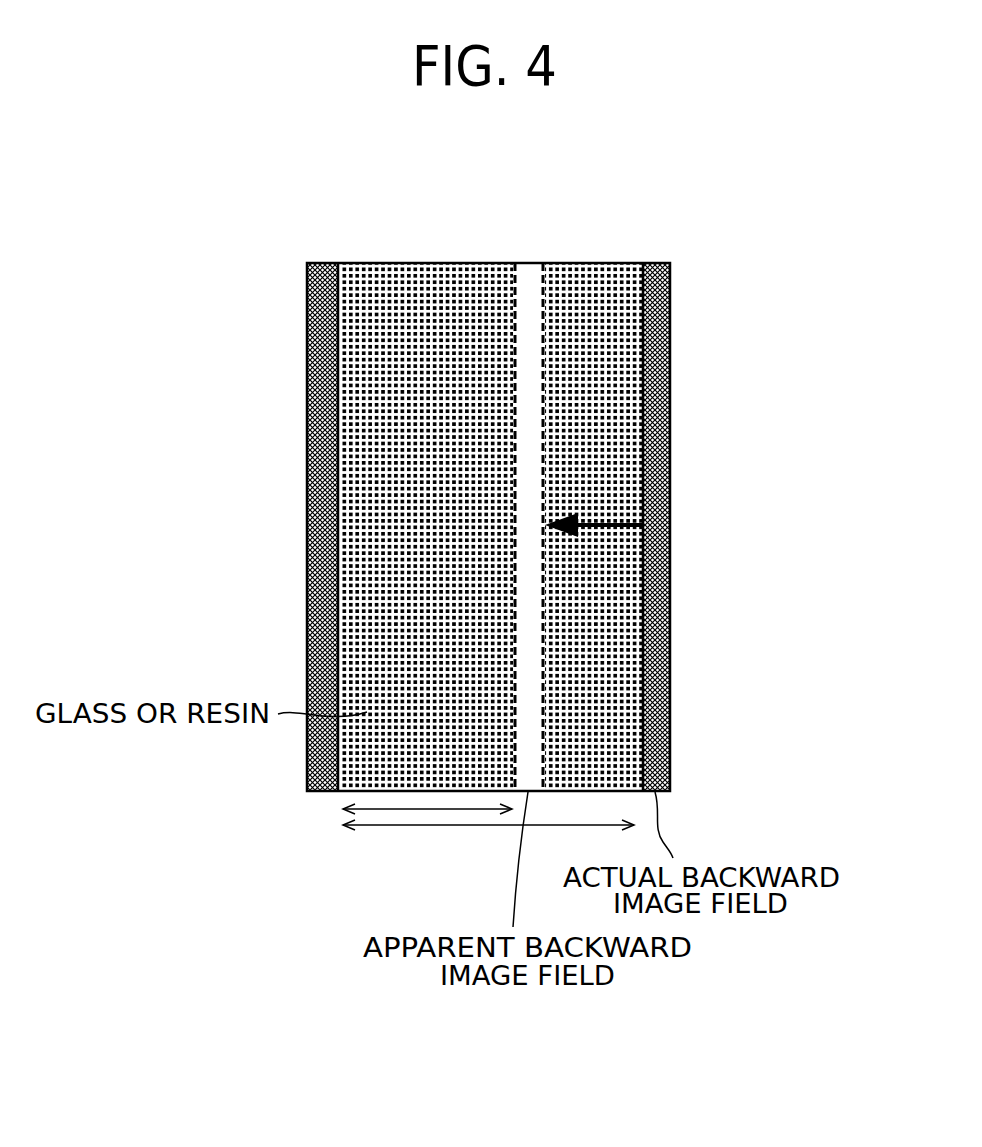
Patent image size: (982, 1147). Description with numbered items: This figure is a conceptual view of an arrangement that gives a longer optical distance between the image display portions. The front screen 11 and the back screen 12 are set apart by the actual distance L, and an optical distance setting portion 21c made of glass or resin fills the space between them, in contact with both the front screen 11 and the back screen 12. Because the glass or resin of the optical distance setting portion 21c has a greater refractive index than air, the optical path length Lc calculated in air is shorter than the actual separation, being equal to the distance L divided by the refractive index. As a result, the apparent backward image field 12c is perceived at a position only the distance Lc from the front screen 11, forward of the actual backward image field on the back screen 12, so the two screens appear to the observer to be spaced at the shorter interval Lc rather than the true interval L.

The front screen 11 is at (322, 262).
The optical distance setting portion 21c is at (417, 262).
The apparent backward image field 12c is at (528, 262).
The back screen 12 is at (656, 262).
The distance between front screen and back screen L is at (373, 828).
The optical path length calculated in the air Lc is at (418, 812).